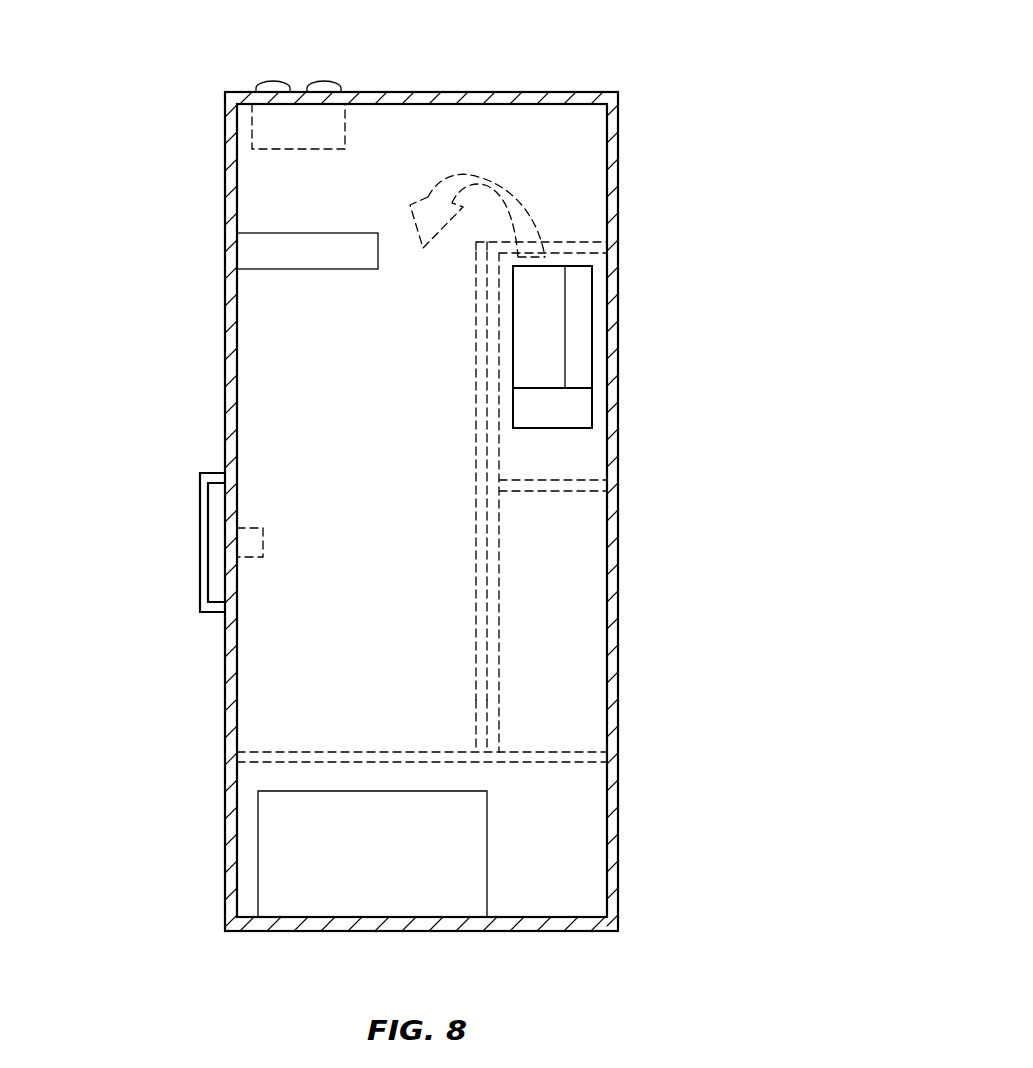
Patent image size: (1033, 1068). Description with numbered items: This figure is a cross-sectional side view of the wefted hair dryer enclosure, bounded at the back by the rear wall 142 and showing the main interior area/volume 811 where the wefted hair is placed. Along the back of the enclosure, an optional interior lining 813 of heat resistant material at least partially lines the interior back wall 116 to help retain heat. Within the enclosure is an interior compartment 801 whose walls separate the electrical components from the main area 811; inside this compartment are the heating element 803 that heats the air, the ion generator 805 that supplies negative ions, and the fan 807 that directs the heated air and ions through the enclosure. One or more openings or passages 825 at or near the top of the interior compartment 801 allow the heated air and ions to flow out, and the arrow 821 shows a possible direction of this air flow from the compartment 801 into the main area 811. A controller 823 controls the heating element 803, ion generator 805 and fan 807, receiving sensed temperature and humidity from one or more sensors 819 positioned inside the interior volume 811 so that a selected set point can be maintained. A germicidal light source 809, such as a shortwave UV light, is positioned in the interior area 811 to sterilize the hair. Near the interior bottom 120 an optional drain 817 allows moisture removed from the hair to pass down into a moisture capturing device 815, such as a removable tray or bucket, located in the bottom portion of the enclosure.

The rear wall 142 is at (620, 118).
The interior area/volume 811 is at (273, 330).
The controller 823 is at (265, 133).
The germicidal light source 809 is at (267, 251).
The sensors 819 is at (252, 538).
The interior bottom 120 is at (200, 557).
The arrow 821 is at (467, 176).
The openings or passages 825 is at (575, 240).
The interior back wall 116 is at (487, 666).
The interior lining 813 is at (480, 731).
The interior compartment 801 is at (585, 468).
The heating element 803 is at (553, 283).
The ion generator 805 is at (578, 323).
The fan 807 is at (577, 405).
The drain 817 is at (292, 752).
The moisture capturing device 815 is at (288, 858).